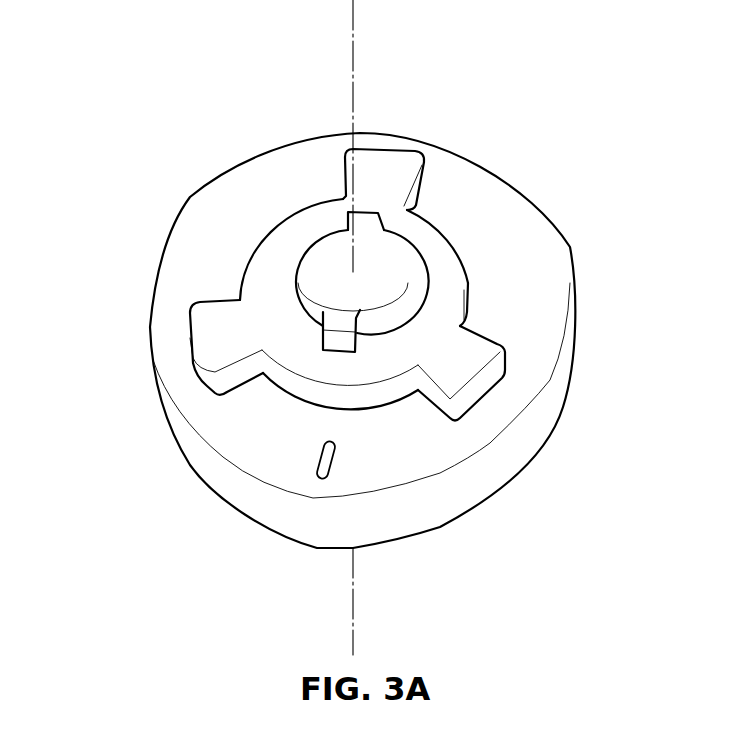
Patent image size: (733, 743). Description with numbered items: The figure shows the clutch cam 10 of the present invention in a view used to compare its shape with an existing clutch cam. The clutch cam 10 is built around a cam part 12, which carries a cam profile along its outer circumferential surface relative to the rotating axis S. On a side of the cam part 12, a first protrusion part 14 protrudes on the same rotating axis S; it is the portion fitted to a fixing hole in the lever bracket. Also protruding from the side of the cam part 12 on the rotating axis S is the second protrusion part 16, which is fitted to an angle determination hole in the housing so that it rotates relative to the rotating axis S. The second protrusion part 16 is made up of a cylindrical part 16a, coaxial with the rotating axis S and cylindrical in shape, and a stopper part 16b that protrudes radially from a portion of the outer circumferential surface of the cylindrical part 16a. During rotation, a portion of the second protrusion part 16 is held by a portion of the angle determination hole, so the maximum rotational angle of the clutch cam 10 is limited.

The clutch cam 10 is at (364, 327).
The cam part 12 is at (540, 344).
The first protrusion part 14 is at (333, 267).
The second protrusion part 16 is at (364, 259).
The cylindrical part 16a is at (468, 283).
The stopper part 16b is at (392, 170).
The rotating axis S is at (353, 33).